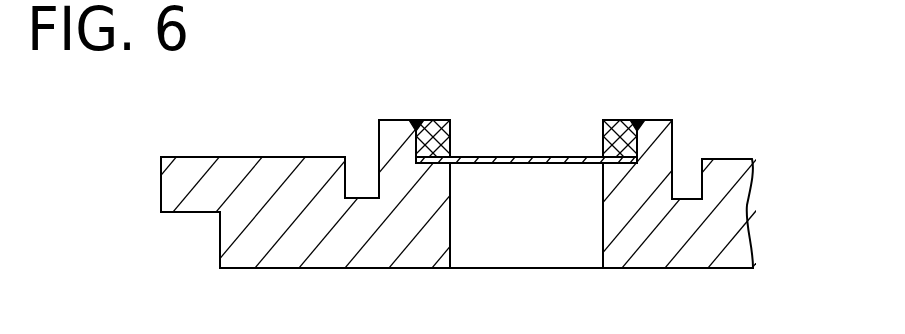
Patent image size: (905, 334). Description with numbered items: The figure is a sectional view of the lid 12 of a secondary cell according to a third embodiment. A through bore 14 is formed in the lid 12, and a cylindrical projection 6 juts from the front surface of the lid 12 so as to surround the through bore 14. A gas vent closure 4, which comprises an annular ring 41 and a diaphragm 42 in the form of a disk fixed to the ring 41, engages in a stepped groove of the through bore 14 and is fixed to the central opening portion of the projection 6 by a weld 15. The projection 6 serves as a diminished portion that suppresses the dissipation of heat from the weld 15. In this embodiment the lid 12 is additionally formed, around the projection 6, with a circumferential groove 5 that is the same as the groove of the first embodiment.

The gas vent closure 4 is at (526, 87).
The circumferential groove 5 is at (351, 156).
The cylindrical projection 6 is at (395, 133).
The lid 12 is at (275, 156).
The through bore 14 is at (452, 270).
The weld 15 is at (415, 119).
The annular ring 41 is at (443, 122).
The diaphragm 42 is at (542, 157).